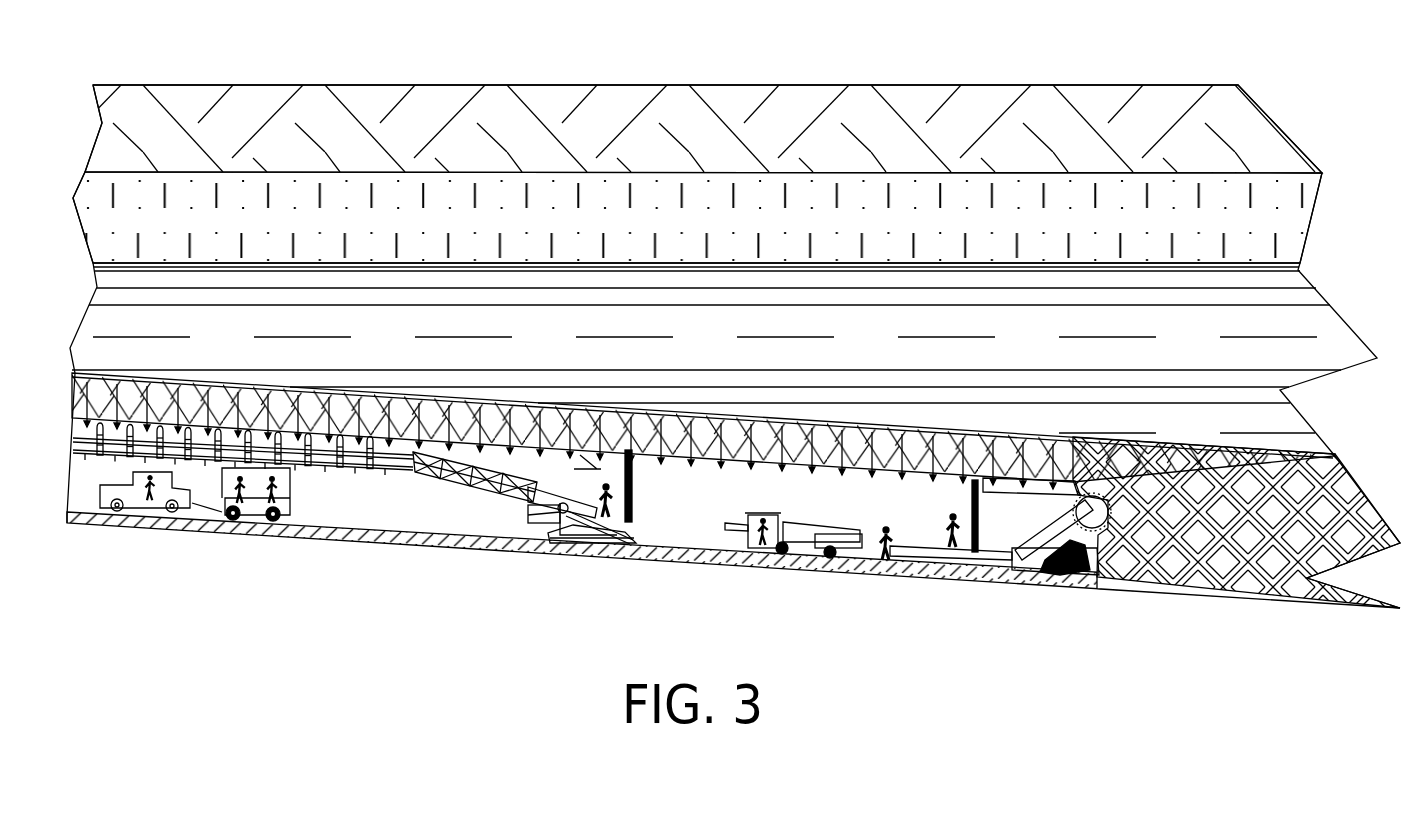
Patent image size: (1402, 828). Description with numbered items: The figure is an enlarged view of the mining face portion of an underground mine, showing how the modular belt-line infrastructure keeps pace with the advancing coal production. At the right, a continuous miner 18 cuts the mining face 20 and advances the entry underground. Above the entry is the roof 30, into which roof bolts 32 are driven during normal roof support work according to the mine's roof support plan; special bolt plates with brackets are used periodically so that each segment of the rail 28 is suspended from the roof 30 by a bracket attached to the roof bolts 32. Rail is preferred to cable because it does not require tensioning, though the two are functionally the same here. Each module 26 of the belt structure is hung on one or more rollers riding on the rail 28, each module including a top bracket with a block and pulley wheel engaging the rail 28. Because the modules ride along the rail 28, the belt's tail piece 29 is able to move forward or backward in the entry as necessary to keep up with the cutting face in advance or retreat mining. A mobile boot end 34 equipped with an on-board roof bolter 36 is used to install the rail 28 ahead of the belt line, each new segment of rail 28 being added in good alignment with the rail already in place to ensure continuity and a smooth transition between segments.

The continuous miner 18 is at (931, 548).
The mining face 20 is at (1078, 497).
The module of belt structure 26 is at (339, 470).
The rail or cable 28 is at (521, 448).
The tail piece 29 is at (560, 509).
The roof 30 is at (838, 460).
The roof bolts 32 is at (608, 414).
The mobile boot end 34 is at (646, 531).
The roof bolter 36 is at (634, 472).